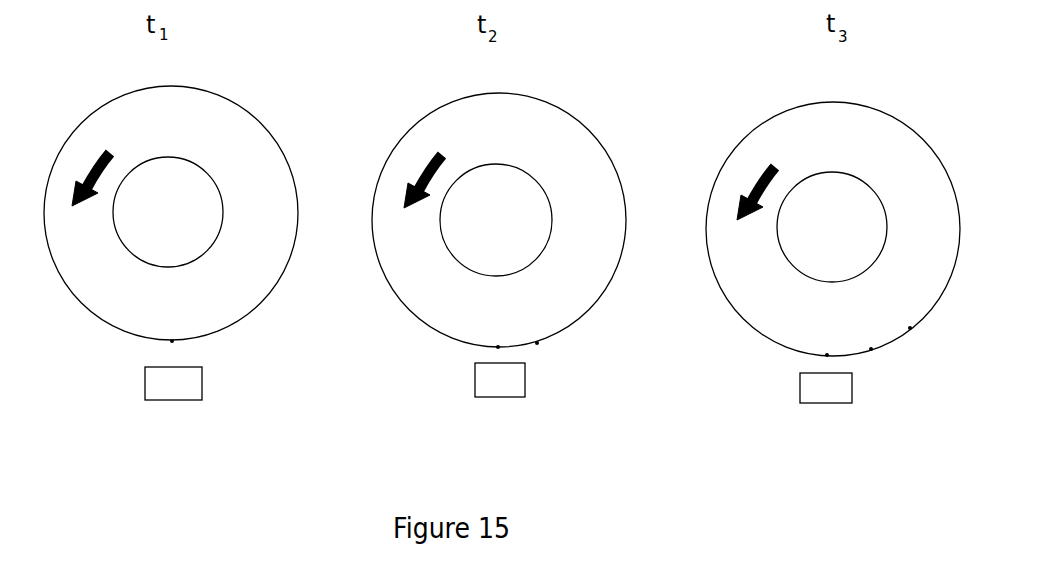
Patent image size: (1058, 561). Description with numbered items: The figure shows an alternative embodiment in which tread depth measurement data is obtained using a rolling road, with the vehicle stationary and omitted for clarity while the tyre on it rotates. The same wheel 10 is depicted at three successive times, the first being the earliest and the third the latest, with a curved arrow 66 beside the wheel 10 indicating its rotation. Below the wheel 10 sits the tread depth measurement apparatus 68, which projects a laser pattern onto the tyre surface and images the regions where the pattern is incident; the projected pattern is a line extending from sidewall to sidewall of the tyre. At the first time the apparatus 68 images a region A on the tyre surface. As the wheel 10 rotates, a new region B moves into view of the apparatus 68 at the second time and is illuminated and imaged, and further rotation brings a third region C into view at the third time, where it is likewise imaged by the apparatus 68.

The wheel 10 is at (502, 221).
The rotation direction arrow 66 is at (427, 173).
The tread depth measurement apparatus 68 is at (172, 341).